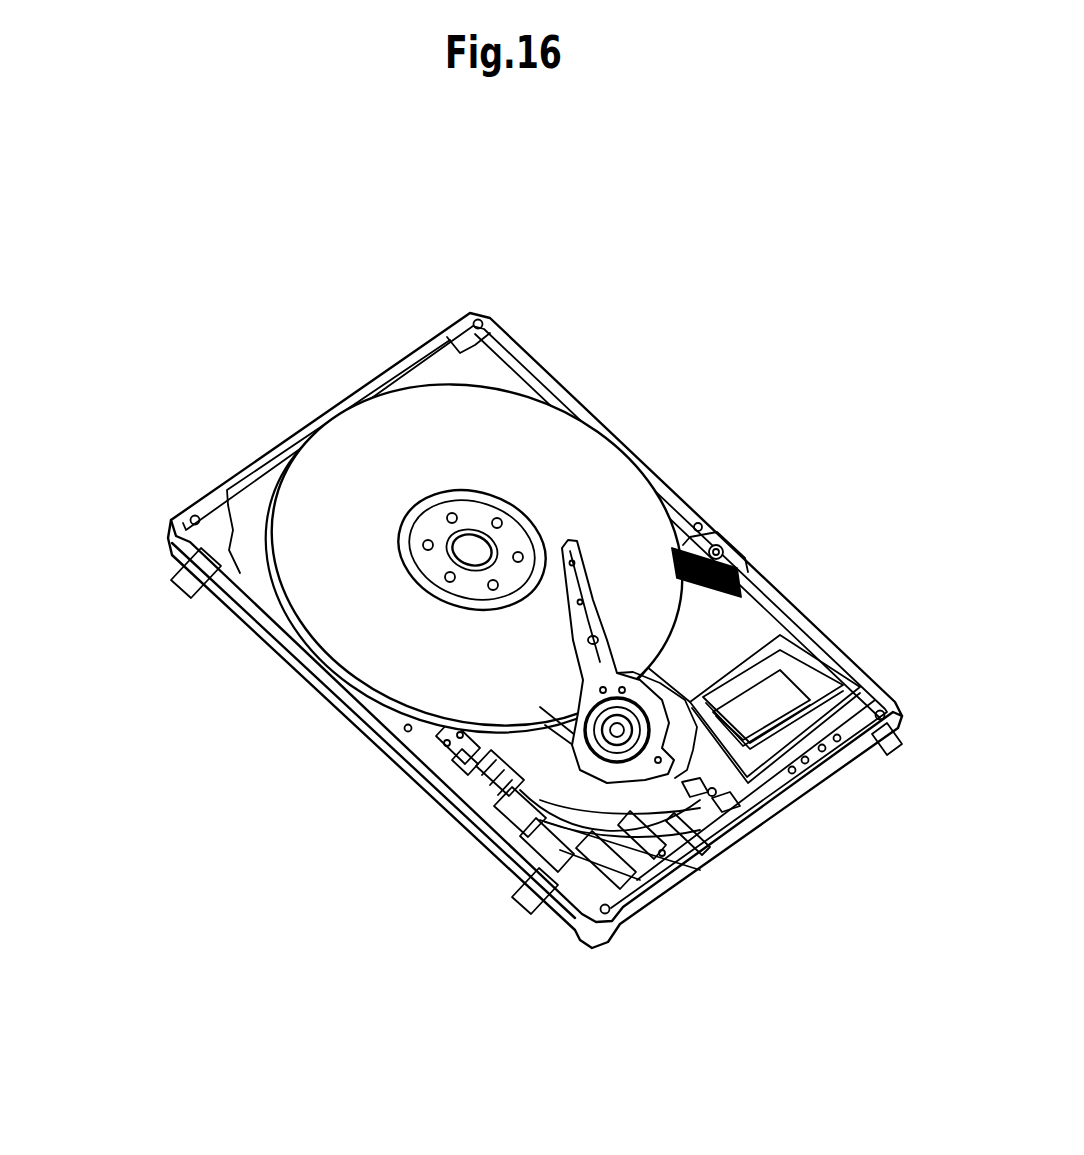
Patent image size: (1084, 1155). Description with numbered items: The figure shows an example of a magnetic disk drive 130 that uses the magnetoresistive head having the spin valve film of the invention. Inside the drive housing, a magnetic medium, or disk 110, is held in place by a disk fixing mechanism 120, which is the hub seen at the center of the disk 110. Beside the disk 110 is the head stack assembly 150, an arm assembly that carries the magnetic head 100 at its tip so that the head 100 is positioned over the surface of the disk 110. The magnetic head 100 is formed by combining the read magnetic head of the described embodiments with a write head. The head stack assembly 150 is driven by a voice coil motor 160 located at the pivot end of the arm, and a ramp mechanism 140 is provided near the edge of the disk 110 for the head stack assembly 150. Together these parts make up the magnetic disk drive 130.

The magnetic head 100 is at (568, 546).
The magnetic medium (disk) 110 is at (560, 457).
The disk fixing mechanism 120 is at (452, 577).
The magnetic disk drive 130 is at (117, 379).
The ramp mechanism 140 is at (723, 530).
The head stack assembly (HSA) 150 is at (595, 585).
The voice coil motor (VCM) 160 is at (603, 813).